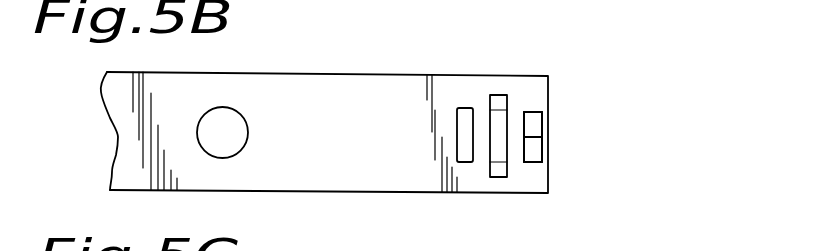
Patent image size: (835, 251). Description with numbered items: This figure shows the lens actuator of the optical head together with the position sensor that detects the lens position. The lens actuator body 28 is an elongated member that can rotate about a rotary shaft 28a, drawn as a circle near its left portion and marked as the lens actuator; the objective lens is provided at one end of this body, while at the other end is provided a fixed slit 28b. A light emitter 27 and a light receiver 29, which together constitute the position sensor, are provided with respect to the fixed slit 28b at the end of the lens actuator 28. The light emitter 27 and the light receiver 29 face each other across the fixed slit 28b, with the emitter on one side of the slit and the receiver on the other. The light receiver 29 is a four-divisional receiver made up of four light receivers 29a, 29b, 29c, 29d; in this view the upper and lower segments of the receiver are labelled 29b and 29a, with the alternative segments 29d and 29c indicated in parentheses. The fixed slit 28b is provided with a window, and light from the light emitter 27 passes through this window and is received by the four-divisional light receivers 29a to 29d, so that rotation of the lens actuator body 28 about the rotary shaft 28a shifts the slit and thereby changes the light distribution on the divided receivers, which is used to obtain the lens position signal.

The light emitter 27 is at (465, 108).
The lens actuator body 28 is at (478, 175).
The rotary shaft 28a is at (230, 153).
The fixed slit 28b is at (508, 95).
The light receiver 29 is at (537, 167).
The four-divisional light receiver 29a is at (542, 150).
The four-divisional light receiver 29b is at (542, 122).
The four-divisional light receiver 29c is at (587, 174).
The four-divisional light receiver 29d is at (639, 121).